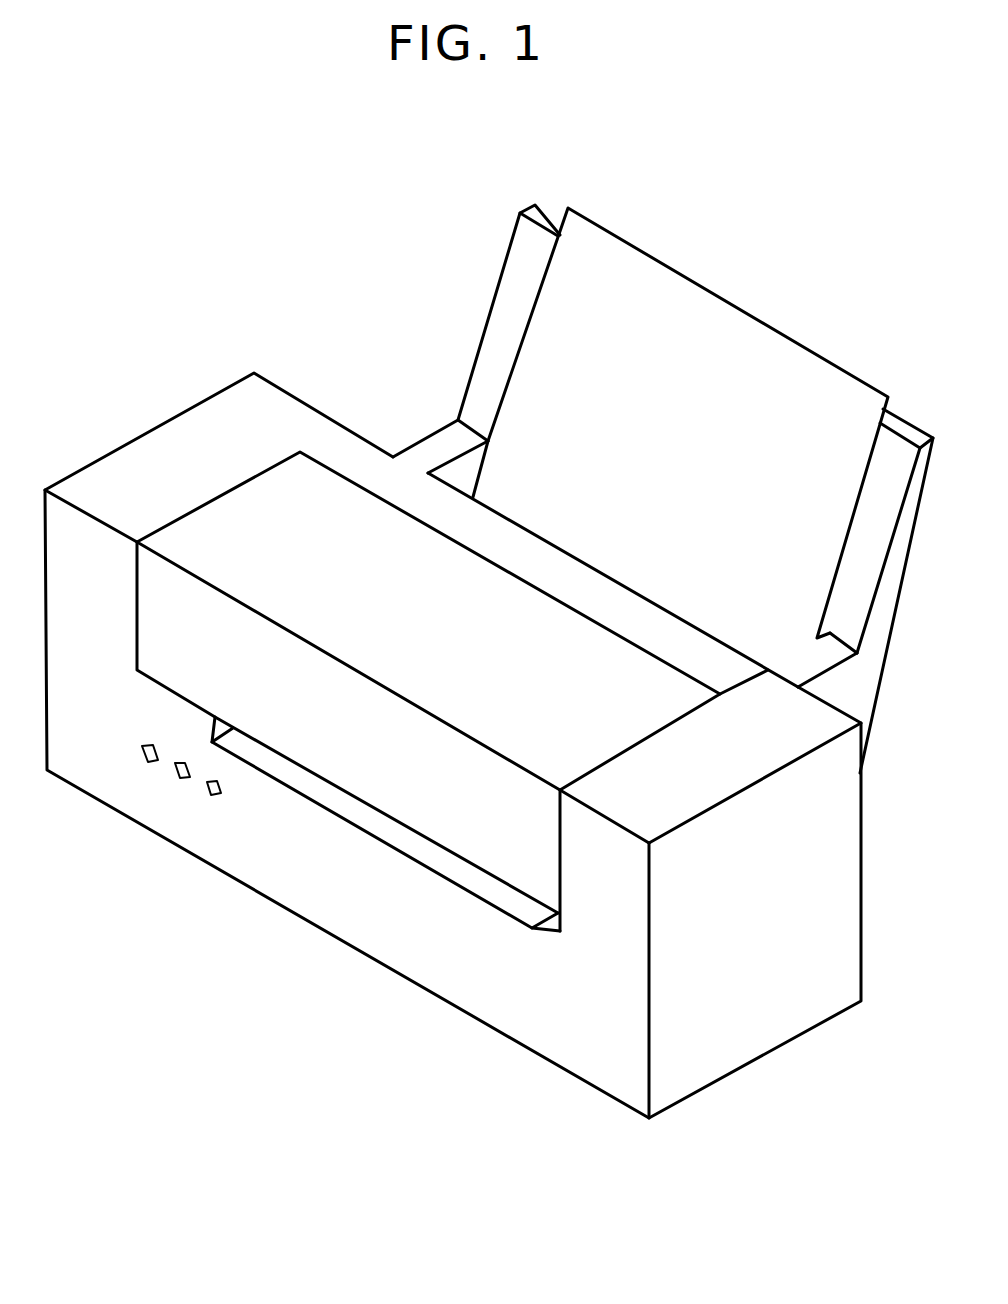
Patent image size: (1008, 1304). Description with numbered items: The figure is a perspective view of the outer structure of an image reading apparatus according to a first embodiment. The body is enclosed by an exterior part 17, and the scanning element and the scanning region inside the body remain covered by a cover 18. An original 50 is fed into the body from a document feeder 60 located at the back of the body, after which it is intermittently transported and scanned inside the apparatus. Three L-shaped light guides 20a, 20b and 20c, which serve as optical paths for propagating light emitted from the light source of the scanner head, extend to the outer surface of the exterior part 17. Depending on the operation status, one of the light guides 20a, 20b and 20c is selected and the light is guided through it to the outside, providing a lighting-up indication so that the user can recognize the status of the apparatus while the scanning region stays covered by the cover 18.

The exterior part 17 is at (348, 945).
The cover 18 is at (343, 503).
The light guide 20a is at (213, 795).
The light guide 20b is at (182, 778).
The light guide 20c is at (147, 761).
The original 50 is at (702, 305).
The document feeder 60 is at (518, 283).